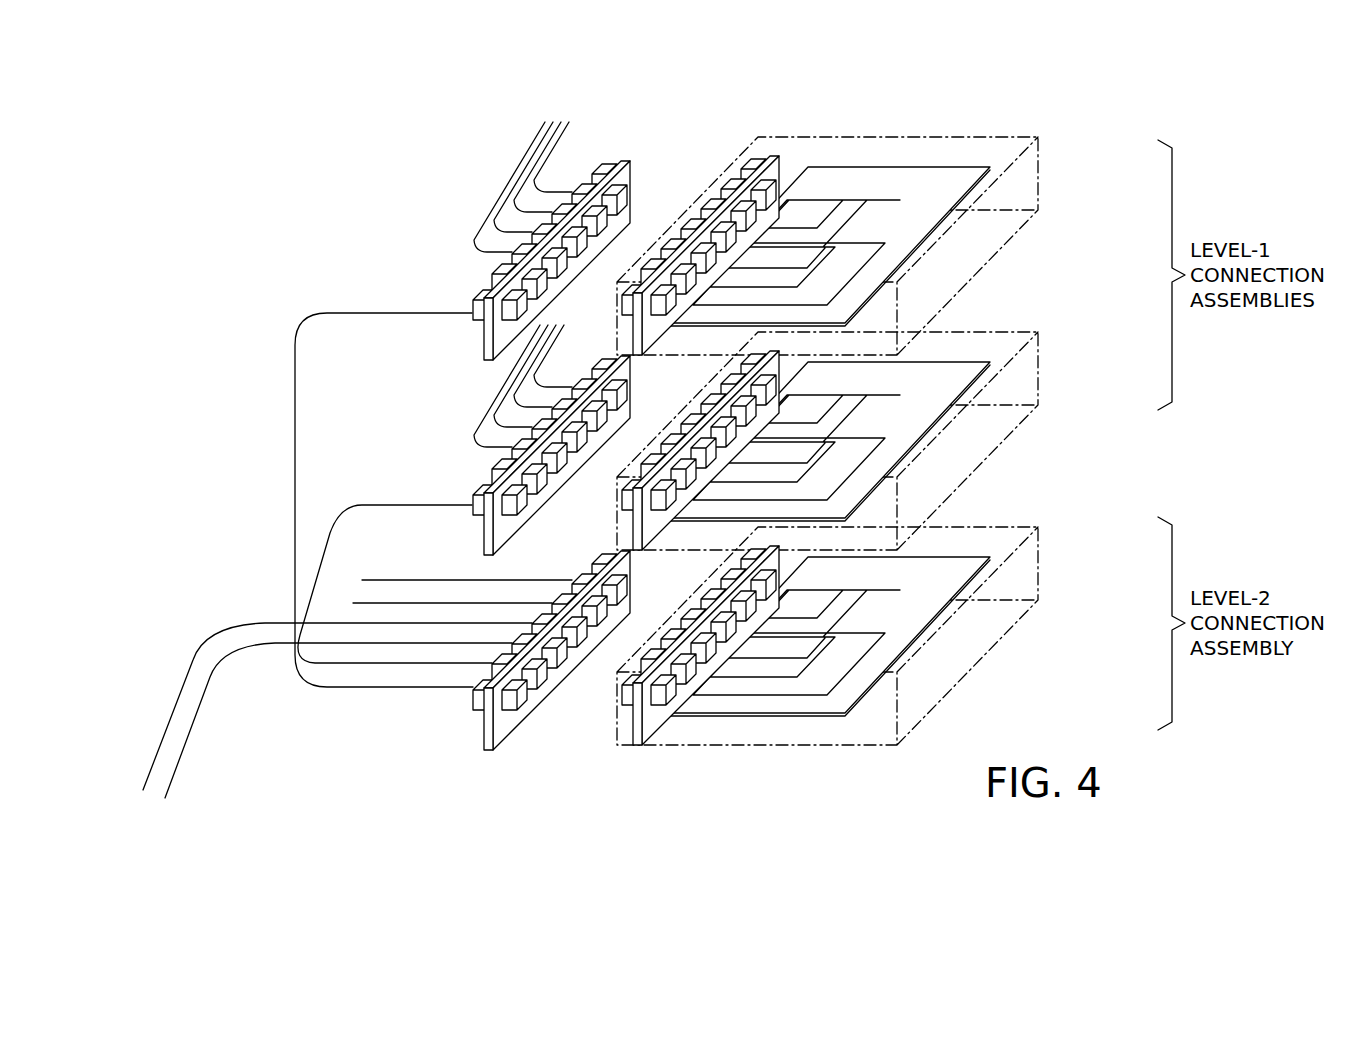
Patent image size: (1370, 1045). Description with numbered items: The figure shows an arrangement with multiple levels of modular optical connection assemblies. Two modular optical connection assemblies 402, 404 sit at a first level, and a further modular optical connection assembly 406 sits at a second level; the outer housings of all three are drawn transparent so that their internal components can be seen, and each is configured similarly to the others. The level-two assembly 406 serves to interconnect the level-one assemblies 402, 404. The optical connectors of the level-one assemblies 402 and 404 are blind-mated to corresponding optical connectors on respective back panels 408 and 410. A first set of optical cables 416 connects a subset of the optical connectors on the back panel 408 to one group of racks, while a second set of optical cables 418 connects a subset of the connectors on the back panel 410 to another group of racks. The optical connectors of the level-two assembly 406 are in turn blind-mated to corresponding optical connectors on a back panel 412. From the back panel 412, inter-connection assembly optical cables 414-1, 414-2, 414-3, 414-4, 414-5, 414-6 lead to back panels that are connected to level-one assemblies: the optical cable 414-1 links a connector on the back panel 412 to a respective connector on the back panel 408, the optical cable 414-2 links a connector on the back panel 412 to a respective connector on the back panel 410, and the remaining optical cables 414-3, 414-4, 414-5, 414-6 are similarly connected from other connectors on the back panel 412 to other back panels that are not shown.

The modular optical connection assembly 402 is at (1017, 183).
The modular optical connection assembly 404 is at (1017, 378).
The modular optical connection assembly 406 is at (1017, 581).
The back panel 408 is at (628, 166).
The back panel 410 is at (624, 368).
The back panel 412 is at (490, 750).
The inter-connection assembly optical cable 414-1 is at (295, 487).
The inter-connection assembly optical cable 414-2 is at (362, 505).
The inter-connection assembly optical cable 414-3 is at (190, 743).
The inter-connection assembly optical cable 414-4 is at (157, 760).
The inter-connection assembly optical cable 414-5 is at (422, 603).
The inter-connection assembly optical cable 414-6 is at (540, 581).
The optical cables 416 is at (558, 152).
The optical cables 418 is at (492, 380).